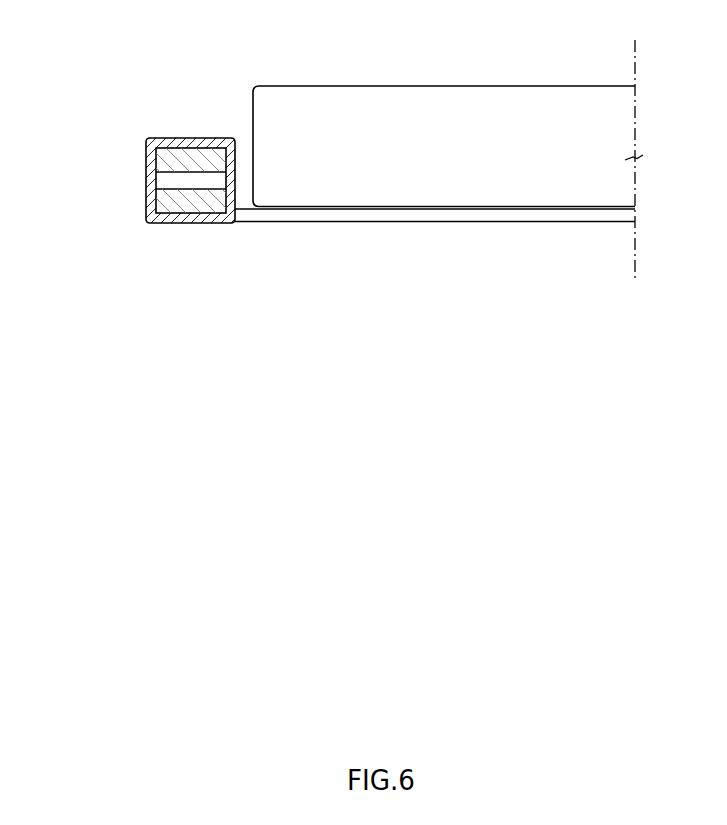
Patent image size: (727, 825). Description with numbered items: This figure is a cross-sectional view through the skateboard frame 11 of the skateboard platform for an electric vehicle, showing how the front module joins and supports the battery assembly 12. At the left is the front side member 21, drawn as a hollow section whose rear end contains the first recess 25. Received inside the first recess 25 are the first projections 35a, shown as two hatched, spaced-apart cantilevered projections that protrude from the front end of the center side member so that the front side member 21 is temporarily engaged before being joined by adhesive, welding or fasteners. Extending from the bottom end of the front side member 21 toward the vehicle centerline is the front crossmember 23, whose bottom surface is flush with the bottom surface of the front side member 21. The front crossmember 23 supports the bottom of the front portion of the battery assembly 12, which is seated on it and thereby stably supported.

The skateboard frame 11 is at (112, 170).
The battery assembly 12 is at (480, 75).
The front side member 21 is at (147, 203).
The front crossmember 23 is at (473, 221).
The first recess 25 is at (206, 158).
The first projections 35a is at (175, 157).